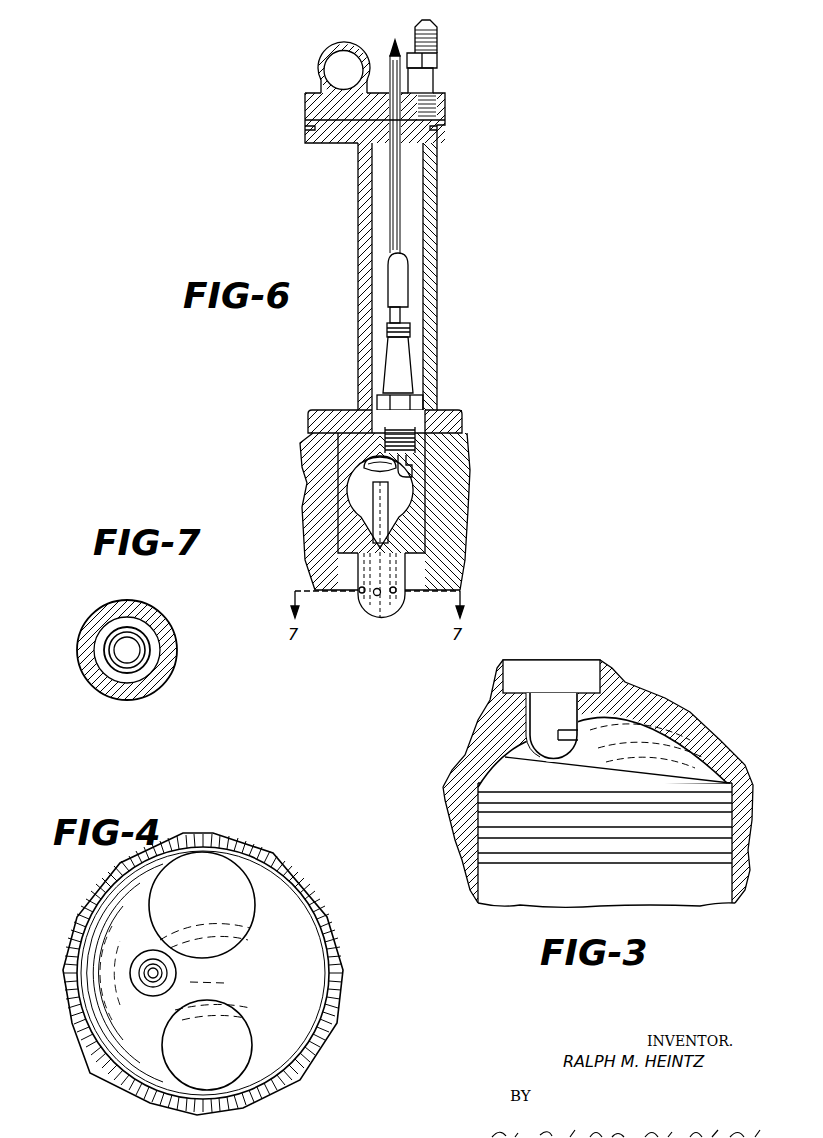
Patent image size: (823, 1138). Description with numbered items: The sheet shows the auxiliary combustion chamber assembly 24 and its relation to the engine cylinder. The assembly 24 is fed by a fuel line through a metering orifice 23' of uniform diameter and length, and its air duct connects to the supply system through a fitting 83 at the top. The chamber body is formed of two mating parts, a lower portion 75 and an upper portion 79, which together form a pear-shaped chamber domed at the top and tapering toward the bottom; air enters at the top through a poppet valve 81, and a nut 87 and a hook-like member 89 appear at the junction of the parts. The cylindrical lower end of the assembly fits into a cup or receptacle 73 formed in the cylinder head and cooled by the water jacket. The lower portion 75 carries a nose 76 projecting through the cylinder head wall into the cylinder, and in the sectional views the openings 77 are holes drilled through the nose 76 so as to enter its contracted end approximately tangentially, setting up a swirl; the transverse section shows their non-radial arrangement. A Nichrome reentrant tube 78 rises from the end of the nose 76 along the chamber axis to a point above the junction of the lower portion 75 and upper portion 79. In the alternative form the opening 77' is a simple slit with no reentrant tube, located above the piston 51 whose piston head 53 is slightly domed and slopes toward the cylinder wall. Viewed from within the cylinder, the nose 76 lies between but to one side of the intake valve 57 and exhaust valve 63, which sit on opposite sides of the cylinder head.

In FIG. 6, the fitting 83 is at (351, 47).
In FIG. 6, the metering orifice 23' is at (445, 56).
In FIG. 6, the auxiliary combustion chamber assembly 24 is at (448, 282).
In FIG. 6, the nut 87 is at (424, 405).
In FIG. 6, the upper portion of assembly body 79 is at (464, 428).
In FIG. 6, the poppet valve 81 is at (368, 463).
In FIG. 6, the contact hook 89 is at (413, 471).
In FIG. 6, the reentrant tube 78 is at (375, 505).
In FIG. 7, the reentrant tube 78 is at (137, 641).
In FIG. 6, the cup or receptacle 73 is at (450, 529).
In FIG. 6, the lower portion of assembly body 75 is at (345, 533).
In FIG. 3, the lower portion of assembly body 75 is at (598, 665).
In FIG. 6, the nose 76 is at (366, 574).
In FIG. 7, the nose 76 is at (157, 646).
In FIG. 3, the nose 76 is at (573, 715).
In FIG. 4, the nose 76 is at (149, 991).
In FIG. 6, the openings 77 is at (388, 617).
In FIG. 7, the openings 77 is at (143, 650).
In FIG. 3, the slit opening 77' is at (592, 744).
In FIG. 3, the piston head 53 is at (488, 768).
In FIG. 3, the piston 51 is at (586, 901).
In FIG. 4, the intake valve 57 is at (206, 909).
In FIG. 4, the exhaust valve 63 is at (205, 1058).